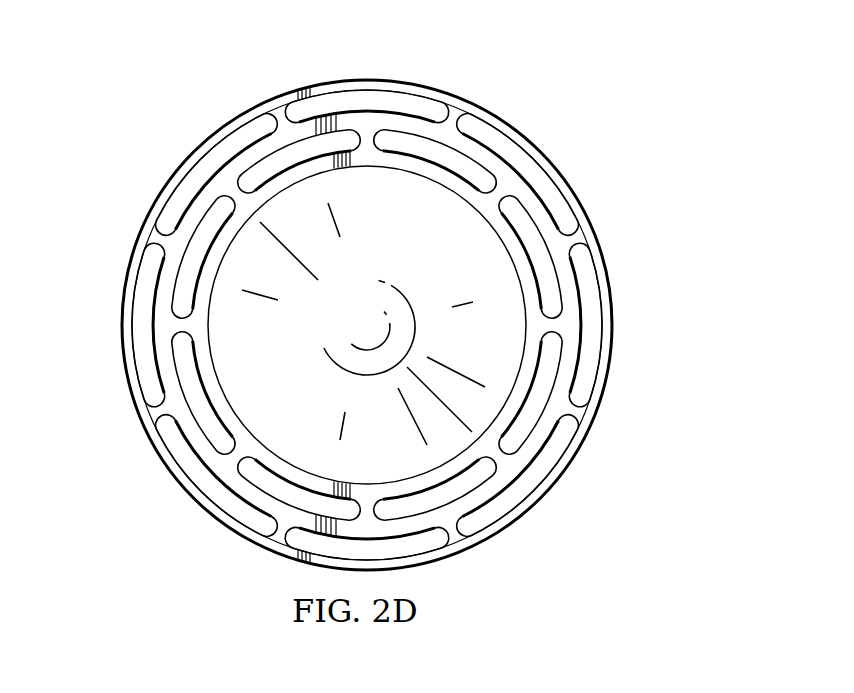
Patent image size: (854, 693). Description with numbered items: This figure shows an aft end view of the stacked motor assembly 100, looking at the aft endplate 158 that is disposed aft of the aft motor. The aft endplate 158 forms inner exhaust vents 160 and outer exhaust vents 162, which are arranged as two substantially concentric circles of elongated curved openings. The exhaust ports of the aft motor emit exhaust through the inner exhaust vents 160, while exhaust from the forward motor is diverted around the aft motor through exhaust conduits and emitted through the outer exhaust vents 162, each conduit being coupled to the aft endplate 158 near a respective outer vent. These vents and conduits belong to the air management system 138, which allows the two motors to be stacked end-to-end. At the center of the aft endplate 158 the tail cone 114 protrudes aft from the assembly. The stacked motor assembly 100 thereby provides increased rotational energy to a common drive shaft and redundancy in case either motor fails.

The stacked motor assembly 100 is at (207, 80).
The tail cone 114 is at (443, 207).
The air management system 138 is at (619, 308).
The aft endplate 158 is at (146, 240).
The inner exhaust vents 160 is at (593, 377).
The outer exhaust vents 162 is at (560, 484).